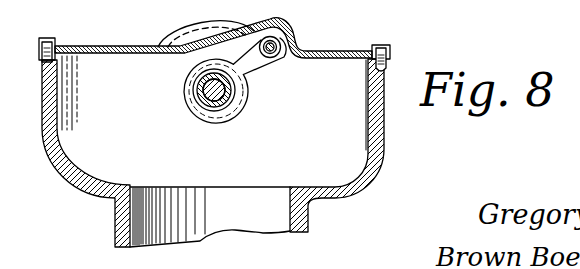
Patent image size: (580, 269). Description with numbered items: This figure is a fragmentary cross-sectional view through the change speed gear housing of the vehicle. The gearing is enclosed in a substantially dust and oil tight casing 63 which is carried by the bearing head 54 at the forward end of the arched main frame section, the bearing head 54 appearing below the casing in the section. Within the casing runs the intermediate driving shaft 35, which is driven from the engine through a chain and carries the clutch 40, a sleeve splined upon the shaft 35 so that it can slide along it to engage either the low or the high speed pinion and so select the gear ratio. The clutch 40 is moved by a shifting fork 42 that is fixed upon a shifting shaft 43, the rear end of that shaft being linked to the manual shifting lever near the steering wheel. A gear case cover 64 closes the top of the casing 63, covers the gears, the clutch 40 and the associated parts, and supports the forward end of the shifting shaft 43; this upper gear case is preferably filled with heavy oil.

The intermediate driving shaft 35 is at (187, 100).
The clutch 40 is at (218, 113).
The shifting fork 42 is at (248, 88).
The shifting shaft 43 is at (279, 44).
The bearing head 54 is at (126, 222).
The casing 63 is at (372, 158).
The gear case cover 64 is at (144, 47).